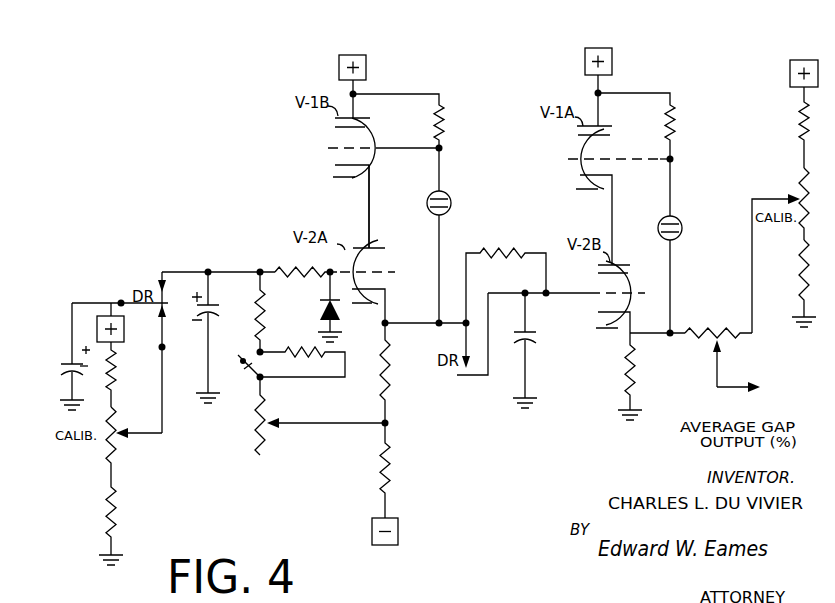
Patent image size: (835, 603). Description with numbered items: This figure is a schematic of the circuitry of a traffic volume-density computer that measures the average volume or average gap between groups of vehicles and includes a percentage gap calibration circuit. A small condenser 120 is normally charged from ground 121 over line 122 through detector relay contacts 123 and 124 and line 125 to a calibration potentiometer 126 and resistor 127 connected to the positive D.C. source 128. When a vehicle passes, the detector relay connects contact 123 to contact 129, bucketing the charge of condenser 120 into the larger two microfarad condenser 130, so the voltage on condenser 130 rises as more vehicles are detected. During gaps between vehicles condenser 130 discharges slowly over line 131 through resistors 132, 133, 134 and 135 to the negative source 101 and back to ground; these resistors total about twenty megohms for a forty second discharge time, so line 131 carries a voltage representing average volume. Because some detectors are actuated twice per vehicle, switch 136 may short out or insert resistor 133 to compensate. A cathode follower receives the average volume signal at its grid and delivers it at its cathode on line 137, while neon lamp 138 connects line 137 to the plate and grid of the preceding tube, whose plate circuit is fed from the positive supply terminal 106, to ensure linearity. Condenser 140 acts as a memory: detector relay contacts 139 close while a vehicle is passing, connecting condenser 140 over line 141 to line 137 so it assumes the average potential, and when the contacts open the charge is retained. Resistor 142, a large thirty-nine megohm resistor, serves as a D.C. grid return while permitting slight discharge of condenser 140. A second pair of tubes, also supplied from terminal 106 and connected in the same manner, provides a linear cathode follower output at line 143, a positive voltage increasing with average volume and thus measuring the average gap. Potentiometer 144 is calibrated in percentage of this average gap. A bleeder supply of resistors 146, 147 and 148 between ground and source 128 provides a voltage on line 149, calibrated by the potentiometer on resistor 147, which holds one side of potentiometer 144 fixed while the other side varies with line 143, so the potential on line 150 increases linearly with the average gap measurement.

The negative source 101 is at (398, 530).
The positive supply terminal 106 is at (366, 70).
The condenser 120 is at (70, 369).
The ground 121 is at (70, 391).
The line 122 is at (115, 294).
The detector relay contact 123 is at (170, 284).
The detector relay contact 124 is at (166, 340).
The line 125 is at (163, 430).
The calibration potentiometer 126 is at (116, 453).
The resistor 127 is at (116, 378).
The positive D.C. source 128 is at (124, 336).
The contact 129 is at (160, 271).
The condenser 130 is at (212, 312).
The line 131 is at (236, 271).
The resistor 132 is at (265, 317).
The resistor 133 is at (302, 351).
The resistor 134 is at (266, 400).
The resistor 135 is at (391, 465).
The switch 136 is at (247, 357).
The line 137 is at (408, 325).
The neon lamp 138 is at (452, 203).
The detector relay contacts 139 is at (456, 377).
The condenser 140 is at (537, 338).
The line 141 is at (500, 295).
The resistor 142 is at (497, 252).
The line 143 is at (652, 336).
The potentiometer 144 is at (733, 340).
The resistor 146 is at (803, 258).
The resistor 147 is at (799, 184).
The resistor 148 is at (799, 124).
The line 149 is at (750, 207).
The line 150 is at (733, 390).